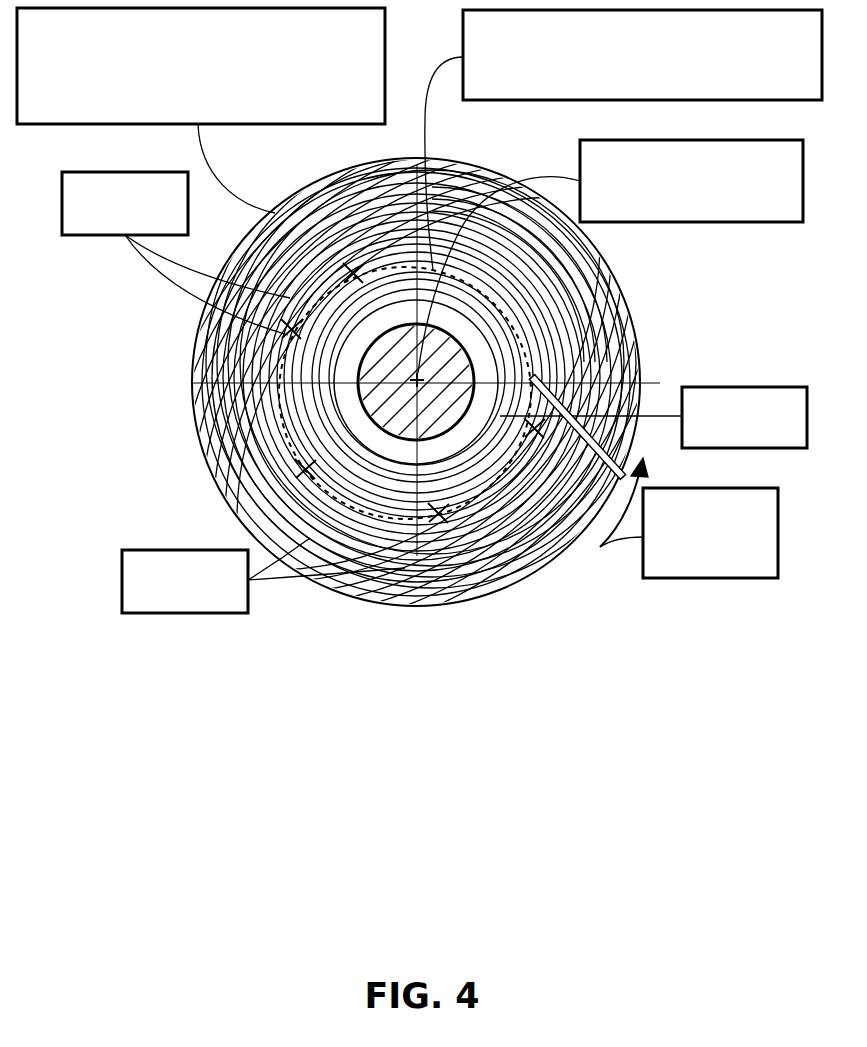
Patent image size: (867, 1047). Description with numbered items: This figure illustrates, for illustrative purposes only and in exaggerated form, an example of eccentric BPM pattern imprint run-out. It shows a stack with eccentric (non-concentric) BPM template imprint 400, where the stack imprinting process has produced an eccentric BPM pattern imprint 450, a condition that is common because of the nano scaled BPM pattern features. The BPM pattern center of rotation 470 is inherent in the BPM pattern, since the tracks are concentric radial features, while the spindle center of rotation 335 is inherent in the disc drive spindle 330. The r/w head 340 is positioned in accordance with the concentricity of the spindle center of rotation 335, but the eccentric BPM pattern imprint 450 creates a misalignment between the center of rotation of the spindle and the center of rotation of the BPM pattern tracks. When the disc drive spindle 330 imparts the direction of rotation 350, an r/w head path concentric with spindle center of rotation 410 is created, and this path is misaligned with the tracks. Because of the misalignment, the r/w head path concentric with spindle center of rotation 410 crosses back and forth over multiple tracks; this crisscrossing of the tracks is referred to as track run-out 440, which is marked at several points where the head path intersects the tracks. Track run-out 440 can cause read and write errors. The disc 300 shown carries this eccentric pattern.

The disk 300 is at (232, 498).
The disc drive spindle 330 is at (232, 387).
The spindle center of rotation 335 is at (247, 448).
The r/w head 340 is at (562, 337).
The direction of rotation 350 is at (778, 533).
The stack with eccentric (non-concentric) BPM template imprint 400 is at (385, 70).
The r/w head path concentric with spindle center of rotation 410 is at (487, 86).
The track run-out 440 is at (75, 182).
The eccentric BPM pattern imprint 450 is at (358, 185).
The BPM pattern center of rotation 470 is at (788, 152).